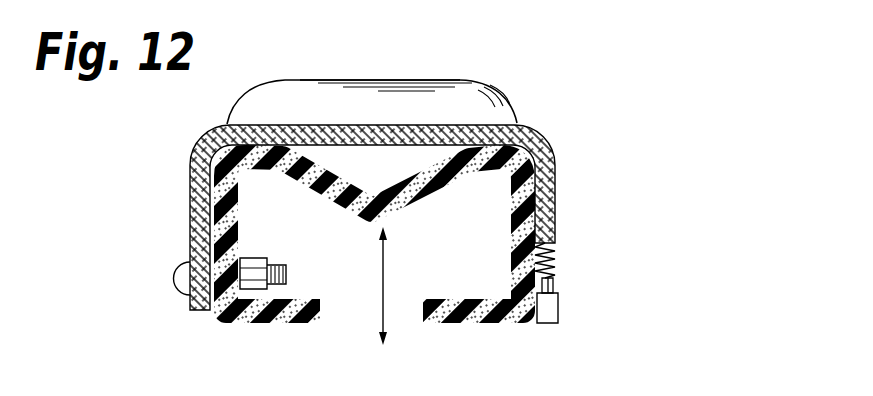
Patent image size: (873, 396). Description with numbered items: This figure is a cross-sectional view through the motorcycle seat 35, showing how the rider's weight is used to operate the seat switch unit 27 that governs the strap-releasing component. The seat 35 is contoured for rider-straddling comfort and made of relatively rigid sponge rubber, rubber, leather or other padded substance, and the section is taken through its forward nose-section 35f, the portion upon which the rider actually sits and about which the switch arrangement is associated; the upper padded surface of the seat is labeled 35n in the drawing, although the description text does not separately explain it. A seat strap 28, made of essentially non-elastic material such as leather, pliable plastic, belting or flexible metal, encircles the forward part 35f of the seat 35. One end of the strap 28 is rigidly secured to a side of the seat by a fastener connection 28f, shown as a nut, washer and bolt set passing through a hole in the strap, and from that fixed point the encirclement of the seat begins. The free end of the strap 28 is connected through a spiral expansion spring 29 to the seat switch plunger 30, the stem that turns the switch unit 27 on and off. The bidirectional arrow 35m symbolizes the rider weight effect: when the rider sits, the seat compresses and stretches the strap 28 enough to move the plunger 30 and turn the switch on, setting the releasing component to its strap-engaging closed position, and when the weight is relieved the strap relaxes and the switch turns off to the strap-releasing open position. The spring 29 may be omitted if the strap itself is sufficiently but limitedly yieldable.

The seat switch unit 27 is at (580, 322).
The seat strap 28 is at (190, 174).
The fastener connection 28f is at (172, 278).
The spiral expansion spring 29 is at (553, 259).
The seat switch plunger 30 is at (555, 285).
The seat 35 is at (548, 108).
The top surface of insert 35n is at (412, 81).
The bidirectional arrow 35m is at (384, 276).
The forward nose-section of seat 35f is at (512, 244).